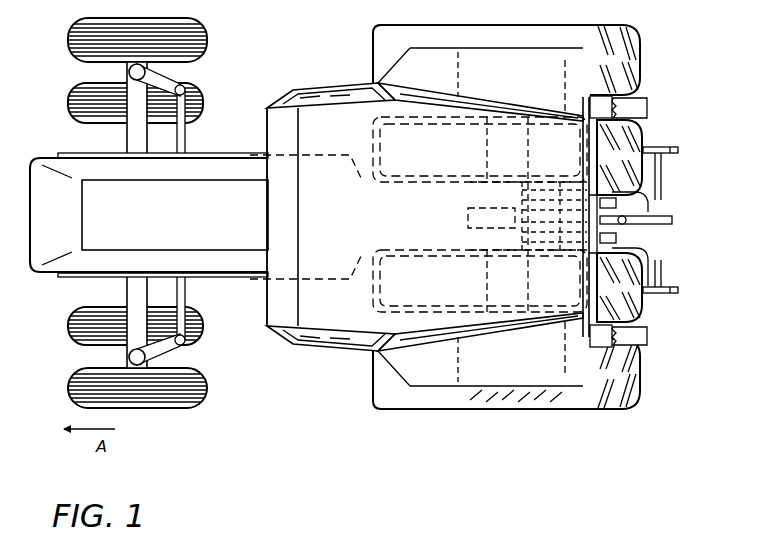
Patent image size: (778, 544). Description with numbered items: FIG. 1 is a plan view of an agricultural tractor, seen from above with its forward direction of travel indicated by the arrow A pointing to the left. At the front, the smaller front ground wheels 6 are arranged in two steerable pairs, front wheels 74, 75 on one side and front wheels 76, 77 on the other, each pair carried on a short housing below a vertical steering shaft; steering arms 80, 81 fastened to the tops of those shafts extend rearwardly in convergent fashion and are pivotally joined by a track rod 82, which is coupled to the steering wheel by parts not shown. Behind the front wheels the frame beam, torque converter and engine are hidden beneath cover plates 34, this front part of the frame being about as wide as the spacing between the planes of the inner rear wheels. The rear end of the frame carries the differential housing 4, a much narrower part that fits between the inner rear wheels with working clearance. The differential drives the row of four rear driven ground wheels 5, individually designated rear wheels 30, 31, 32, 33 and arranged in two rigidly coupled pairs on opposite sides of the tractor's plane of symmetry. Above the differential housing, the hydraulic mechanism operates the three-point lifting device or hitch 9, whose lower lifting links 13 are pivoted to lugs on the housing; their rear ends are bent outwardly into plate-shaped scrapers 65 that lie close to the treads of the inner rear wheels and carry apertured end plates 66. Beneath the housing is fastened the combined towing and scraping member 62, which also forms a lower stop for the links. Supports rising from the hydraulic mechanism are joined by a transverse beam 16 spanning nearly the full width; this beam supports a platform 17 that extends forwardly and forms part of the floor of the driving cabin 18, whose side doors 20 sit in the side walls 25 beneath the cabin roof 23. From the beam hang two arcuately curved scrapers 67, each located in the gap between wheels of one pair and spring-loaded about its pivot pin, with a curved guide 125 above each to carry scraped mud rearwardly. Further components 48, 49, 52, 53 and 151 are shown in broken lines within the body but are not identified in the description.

The differential housing 4 is at (412, 252).
The rear driven ground wheels 5 is at (620, 412).
The front ground wheels 6 is at (74, 60).
The three-point lifting device or hitch 9 is at (694, 266).
The lower lifting links 13 is at (646, 212).
The beam 16 is at (566, 75).
The platform 17 is at (525, 56).
The driving cabin 18 is at (265, 220).
The side doors 20 is at (326, 90).
The cabin roof 23 is at (267, 322).
The side walls 25 is at (470, 98).
The rear wheel 30 is at (492, 411).
The rear wheel 31 is at (642, 326).
The rear wheel 32 is at (642, 140).
The rear wheel 33 is at (373, 42).
The cover plates 34 is at (216, 278).
The lower conveyor 48 is at (478, 282).
The upper conveyor 49 is at (486, 178).
The lower picking unit 52 is at (486, 308).
The upper picking unit 53 is at (486, 150).
The combined towing and scraping member 62 is at (660, 232).
The plate-shaped scrapers 65 is at (664, 174).
The end plates 66 is at (679, 150).
The arcuately curved scrapers 67 is at (600, 95).
The front wheel 74 is at (198, 22).
The front wheel 75 is at (200, 111).
The front wheel 76 is at (200, 315).
The front wheel 77 is at (200, 401).
The steering arm 80 is at (165, 82).
The steering arm 81 is at (170, 343).
The track rod 82 is at (186, 146).
The curved guide 125 is at (649, 104).
The gearbox 151 is at (527, 216).